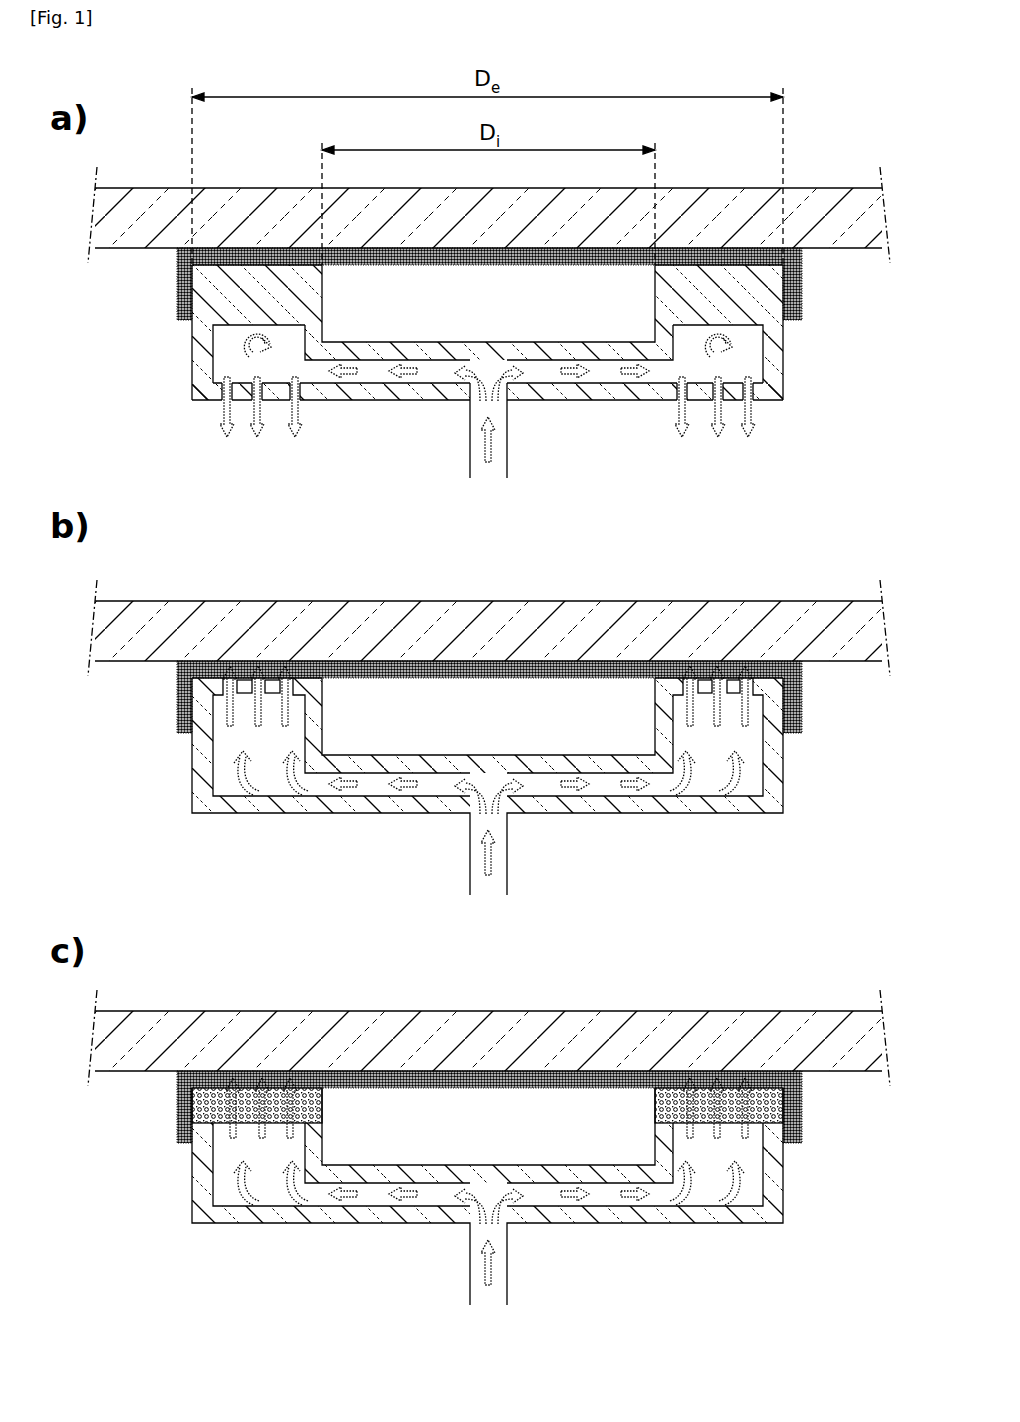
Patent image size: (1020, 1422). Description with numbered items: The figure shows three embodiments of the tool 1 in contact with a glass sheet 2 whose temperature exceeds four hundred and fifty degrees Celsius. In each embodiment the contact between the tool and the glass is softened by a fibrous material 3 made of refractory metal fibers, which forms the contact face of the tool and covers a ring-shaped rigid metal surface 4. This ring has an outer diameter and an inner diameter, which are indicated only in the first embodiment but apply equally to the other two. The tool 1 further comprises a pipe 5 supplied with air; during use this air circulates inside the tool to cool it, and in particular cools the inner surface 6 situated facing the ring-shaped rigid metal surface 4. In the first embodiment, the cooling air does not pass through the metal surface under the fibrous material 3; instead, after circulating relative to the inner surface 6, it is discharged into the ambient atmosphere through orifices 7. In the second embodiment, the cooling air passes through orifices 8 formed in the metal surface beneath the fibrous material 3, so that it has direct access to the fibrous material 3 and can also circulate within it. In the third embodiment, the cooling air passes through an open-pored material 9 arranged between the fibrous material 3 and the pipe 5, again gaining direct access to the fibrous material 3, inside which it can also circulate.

The tool 1 is at (138, 358).
The glass sheet 2 is at (812, 185).
The fibrous material 3 is at (415, 258).
The ring-shaped rigid metal surface 4 is at (702, 265).
The pipe 5 is at (440, 358).
The inner surface 6 is at (200, 330).
The orifices 7 is at (305, 407).
The orifices 8 is at (300, 712).
The open-pored material 9 is at (190, 1105).